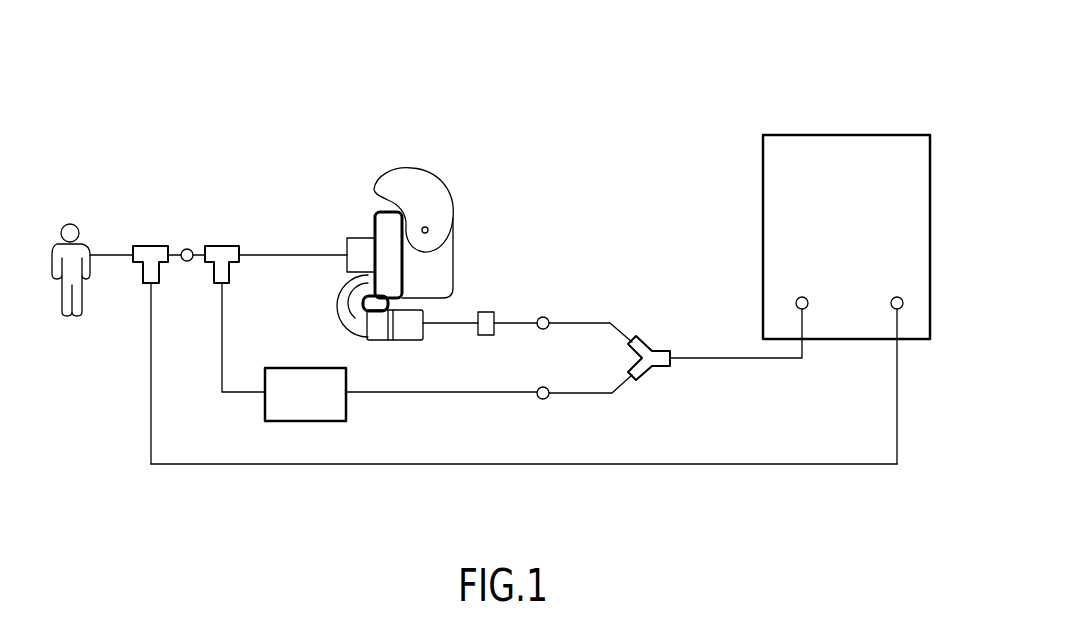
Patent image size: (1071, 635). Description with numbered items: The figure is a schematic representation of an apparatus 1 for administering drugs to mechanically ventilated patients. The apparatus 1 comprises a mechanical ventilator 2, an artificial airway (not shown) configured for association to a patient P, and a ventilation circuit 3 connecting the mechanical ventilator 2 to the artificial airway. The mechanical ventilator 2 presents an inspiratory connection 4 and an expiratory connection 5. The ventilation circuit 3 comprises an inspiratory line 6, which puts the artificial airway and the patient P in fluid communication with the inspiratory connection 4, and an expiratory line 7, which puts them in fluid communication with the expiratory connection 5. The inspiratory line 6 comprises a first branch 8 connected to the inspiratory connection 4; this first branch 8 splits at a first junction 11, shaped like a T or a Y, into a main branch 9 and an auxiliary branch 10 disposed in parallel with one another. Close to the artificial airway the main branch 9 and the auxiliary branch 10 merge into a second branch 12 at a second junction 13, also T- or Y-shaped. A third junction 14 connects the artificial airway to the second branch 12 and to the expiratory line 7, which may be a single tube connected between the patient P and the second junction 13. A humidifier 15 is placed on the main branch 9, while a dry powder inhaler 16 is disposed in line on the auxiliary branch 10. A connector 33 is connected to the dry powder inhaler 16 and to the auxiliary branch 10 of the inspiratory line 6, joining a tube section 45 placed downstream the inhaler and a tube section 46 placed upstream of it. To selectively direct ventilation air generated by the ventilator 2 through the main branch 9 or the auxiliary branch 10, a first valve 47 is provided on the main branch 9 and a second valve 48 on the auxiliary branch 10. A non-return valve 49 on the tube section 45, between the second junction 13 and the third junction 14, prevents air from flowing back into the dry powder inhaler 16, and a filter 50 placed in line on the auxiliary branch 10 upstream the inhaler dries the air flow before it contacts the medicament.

The apparatus 1 is at (698, 62).
The mechanical ventilator 2 is at (876, 122).
The ventilation circuit 3 is at (598, 264).
The inspiratory connection 4 is at (802, 296).
The expiratory connection 5 is at (891, 305).
The inspiratory line 6 is at (647, 405).
The expiratory line 7 is at (467, 465).
The first branch 8 is at (742, 360).
The main branch 9 is at (380, 393).
The auxiliary branch 10 is at (616, 304).
The first junction 11 is at (655, 352).
The second branch 12 is at (182, 250).
The second junction 13 is at (231, 246).
The third junction 14 is at (144, 246).
The humidifier 15 is at (277, 421).
The dry powder inhaler 16 is at (480, 206).
The connector 33 is at (354, 214).
The tube section 45 is at (310, 258).
The tube section 46 is at (450, 322).
The first valve 47 is at (537, 386).
The second valve 48 is at (546, 328).
The non-return valve 49 is at (189, 250).
The filter 50 is at (499, 319).
The patient P is at (50, 240).